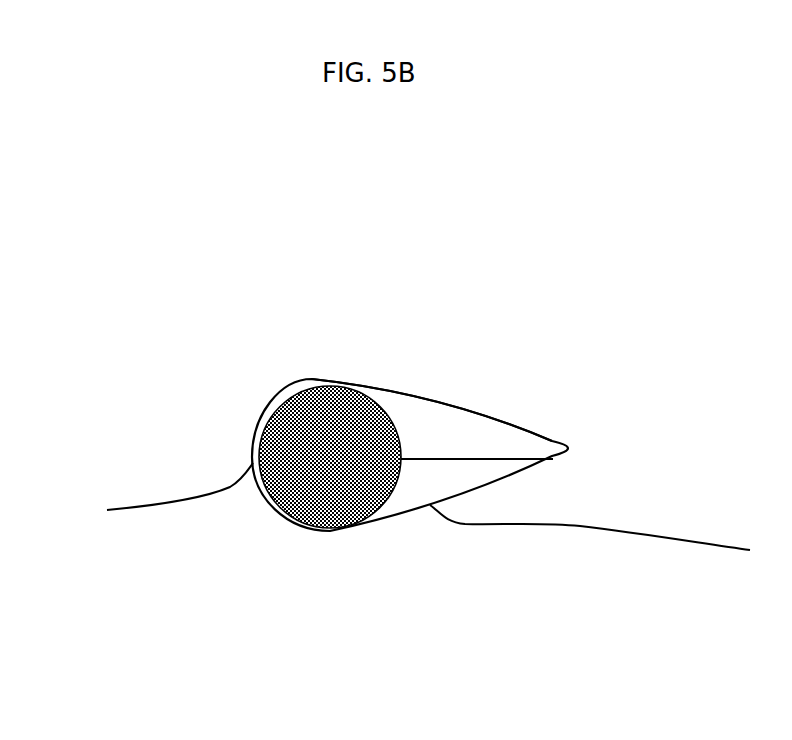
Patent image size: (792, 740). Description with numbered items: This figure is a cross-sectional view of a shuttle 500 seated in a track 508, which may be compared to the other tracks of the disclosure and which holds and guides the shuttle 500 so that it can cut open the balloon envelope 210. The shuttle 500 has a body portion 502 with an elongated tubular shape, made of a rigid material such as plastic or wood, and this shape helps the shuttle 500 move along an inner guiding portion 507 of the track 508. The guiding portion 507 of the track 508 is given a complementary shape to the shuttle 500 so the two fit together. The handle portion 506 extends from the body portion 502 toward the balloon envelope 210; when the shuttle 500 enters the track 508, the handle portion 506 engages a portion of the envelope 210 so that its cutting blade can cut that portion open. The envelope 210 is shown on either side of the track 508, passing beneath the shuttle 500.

The shuttle 500 is at (665, 64).
The body portion 502 is at (287, 388).
The track 508 is at (312, 380).
The inner guiding portion 507 is at (410, 415).
The handle portion 506 is at (452, 458).
The balloon envelope 210 is at (578, 525).